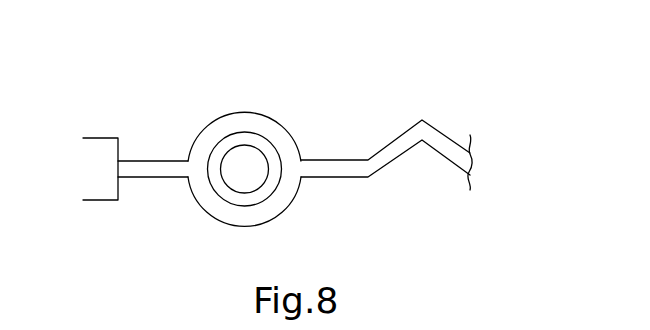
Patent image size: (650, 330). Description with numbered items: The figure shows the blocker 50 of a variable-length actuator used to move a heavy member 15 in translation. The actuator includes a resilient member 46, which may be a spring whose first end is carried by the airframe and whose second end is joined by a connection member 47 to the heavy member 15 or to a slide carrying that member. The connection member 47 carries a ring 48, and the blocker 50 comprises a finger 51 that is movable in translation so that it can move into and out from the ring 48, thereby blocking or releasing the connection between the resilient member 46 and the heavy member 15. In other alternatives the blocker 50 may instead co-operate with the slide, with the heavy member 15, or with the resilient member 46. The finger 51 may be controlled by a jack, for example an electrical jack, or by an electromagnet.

The heavy member 15 is at (105, 180).
The resilient member 46 is at (392, 141).
The connection member 47 is at (157, 78).
The ring 48 is at (222, 117).
The blocker 50 is at (247, 163).
The finger 51 is at (245, 169).